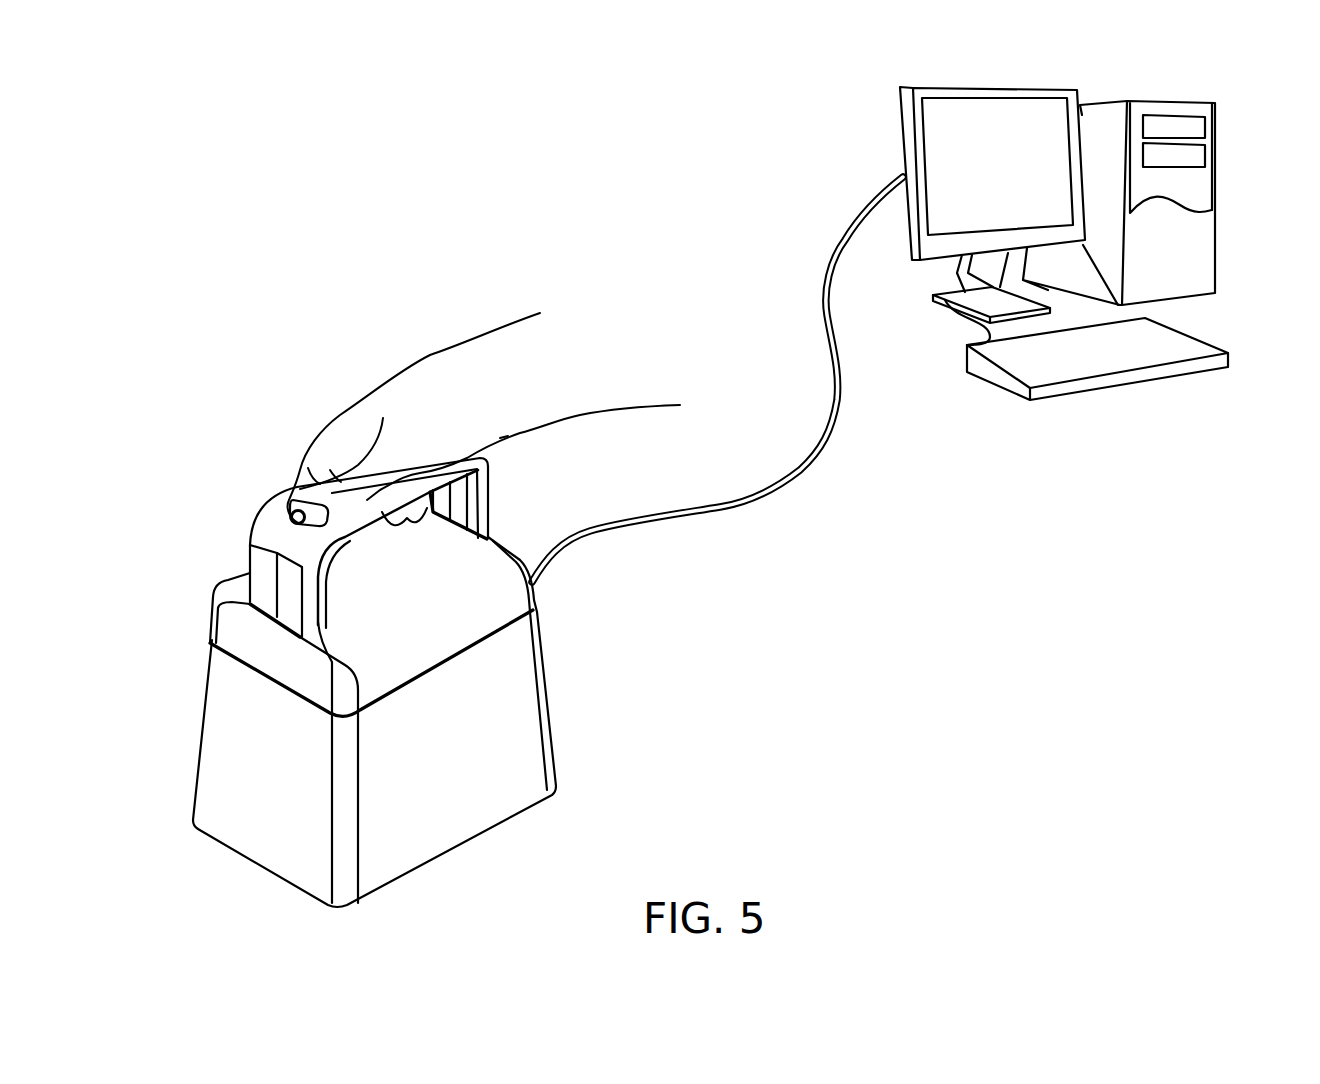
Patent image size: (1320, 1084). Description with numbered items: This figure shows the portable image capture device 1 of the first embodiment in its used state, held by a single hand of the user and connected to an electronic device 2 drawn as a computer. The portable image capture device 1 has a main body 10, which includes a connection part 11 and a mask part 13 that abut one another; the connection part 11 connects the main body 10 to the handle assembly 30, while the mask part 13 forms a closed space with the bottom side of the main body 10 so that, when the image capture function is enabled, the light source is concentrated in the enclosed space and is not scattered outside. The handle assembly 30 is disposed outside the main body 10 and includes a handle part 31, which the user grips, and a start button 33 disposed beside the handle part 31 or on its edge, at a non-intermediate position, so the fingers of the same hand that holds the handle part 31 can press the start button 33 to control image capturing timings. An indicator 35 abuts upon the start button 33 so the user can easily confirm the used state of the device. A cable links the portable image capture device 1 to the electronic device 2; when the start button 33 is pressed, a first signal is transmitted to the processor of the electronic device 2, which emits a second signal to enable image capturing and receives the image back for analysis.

The portable image capture device 1 is at (370, 299).
The electronic device 2 is at (845, 100).
The main body 10 is at (687, 607).
The connection part 11 is at (515, 590).
The mask part 13 is at (530, 704).
The handle assembly 30 is at (287, 373).
The handle part 31 is at (273, 530).
The start button 33 is at (298, 515).
The indicator 35 is at (291, 503).